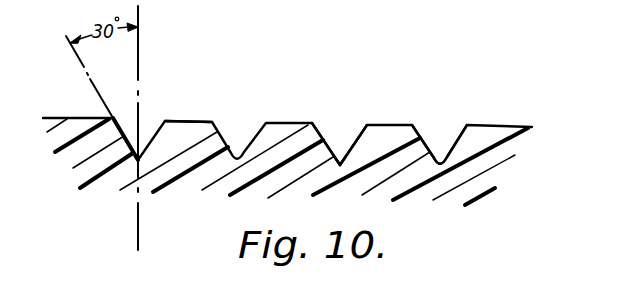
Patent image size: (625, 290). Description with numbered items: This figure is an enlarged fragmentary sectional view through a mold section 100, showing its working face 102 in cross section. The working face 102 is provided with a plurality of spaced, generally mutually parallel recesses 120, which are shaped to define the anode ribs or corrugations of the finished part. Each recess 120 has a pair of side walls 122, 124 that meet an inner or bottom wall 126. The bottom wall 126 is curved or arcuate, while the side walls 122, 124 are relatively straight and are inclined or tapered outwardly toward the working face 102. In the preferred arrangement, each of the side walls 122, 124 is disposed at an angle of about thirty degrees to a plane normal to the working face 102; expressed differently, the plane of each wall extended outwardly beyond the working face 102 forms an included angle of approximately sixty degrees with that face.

The mold section 100 is at (502, 110).
The working face 102 is at (186, 120).
The recess 120 is at (446, 154).
The side wall 122 is at (323, 123).
The side wall 124 is at (354, 142).
The bottom wall 126 is at (340, 160).